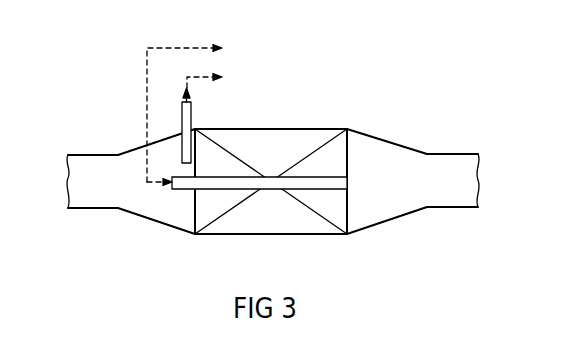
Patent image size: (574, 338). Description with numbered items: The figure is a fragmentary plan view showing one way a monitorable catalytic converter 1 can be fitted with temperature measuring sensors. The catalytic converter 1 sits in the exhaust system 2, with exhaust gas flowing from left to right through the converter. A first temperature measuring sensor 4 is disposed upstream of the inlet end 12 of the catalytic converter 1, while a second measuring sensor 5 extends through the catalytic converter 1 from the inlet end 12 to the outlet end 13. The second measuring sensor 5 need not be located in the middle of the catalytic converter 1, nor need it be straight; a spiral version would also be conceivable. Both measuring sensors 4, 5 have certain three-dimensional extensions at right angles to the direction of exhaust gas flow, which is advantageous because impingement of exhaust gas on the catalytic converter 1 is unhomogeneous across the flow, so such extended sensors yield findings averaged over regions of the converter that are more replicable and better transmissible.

The catalytic converter 1 is at (298, 128).
The exhaust system 2 is at (400, 222).
The first temperature measuring sensor 4 is at (191, 117).
The second measuring sensor 5 is at (178, 191).
The inlet end 12 is at (195, 208).
The outlet end 13 is at (347, 202).